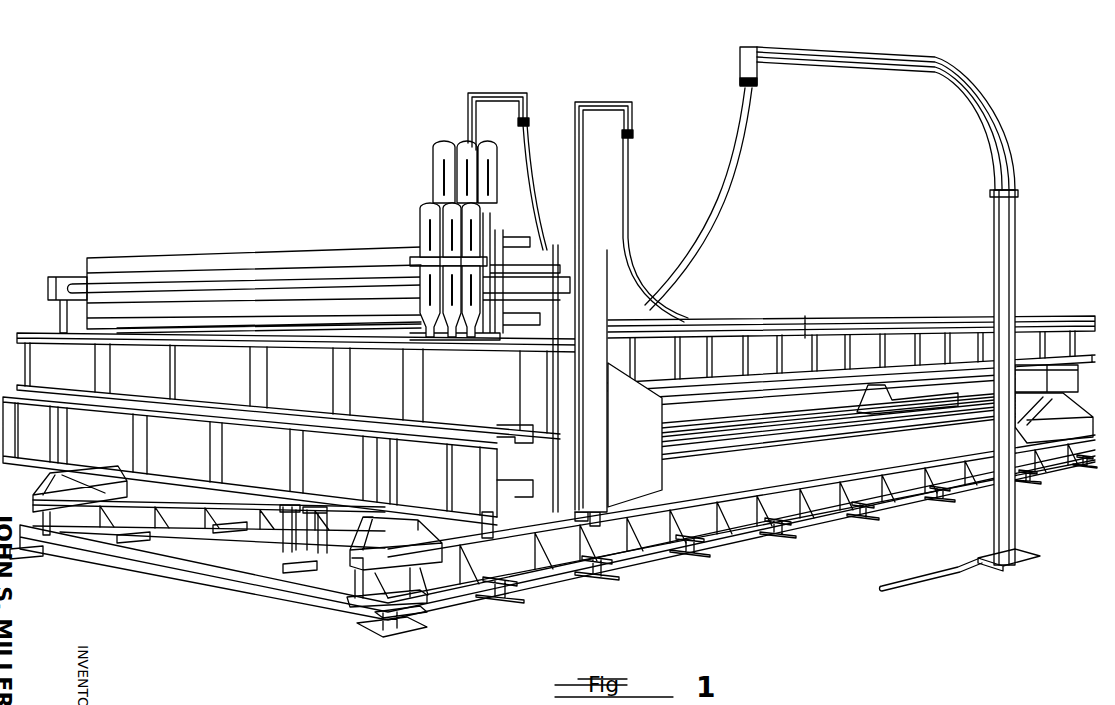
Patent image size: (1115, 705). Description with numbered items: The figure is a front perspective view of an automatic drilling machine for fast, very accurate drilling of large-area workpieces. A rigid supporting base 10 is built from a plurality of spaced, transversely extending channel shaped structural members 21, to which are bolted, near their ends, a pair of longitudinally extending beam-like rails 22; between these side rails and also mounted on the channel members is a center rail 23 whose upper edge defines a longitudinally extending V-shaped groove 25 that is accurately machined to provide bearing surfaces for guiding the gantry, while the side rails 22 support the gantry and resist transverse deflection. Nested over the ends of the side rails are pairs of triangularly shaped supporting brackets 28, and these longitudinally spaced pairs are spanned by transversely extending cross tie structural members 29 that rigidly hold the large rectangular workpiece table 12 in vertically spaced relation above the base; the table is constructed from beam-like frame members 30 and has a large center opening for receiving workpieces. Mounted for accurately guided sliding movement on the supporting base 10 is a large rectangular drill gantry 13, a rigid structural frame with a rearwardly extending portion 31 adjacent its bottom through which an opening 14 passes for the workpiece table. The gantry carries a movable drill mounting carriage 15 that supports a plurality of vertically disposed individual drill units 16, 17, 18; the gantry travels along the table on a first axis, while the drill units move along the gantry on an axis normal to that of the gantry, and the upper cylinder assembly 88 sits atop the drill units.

The supporting base 10 is at (717, 533).
The workpiece table 12 is at (837, 317).
The drill gantry 13 is at (293, 255).
The opening 14 is at (127, 332).
The drill mounting carriage 15 is at (503, 243).
The drill unit 16 is at (427, 213).
The drill unit 17 is at (437, 210).
The drill unit 18 is at (470, 213).
The channel shaped structural members 21 is at (937, 503).
The beam-like rails 22 is at (827, 493).
The center rail 23 is at (287, 545).
The V-shaped groove 25 is at (305, 550).
The supporting brackets 28 is at (1067, 419).
The cross tie structural members 29 is at (1060, 373).
The frame members 30 is at (934, 338).
The rearwardly extending portion 31 is at (647, 490).
The torch cylinder 88 is at (445, 147).